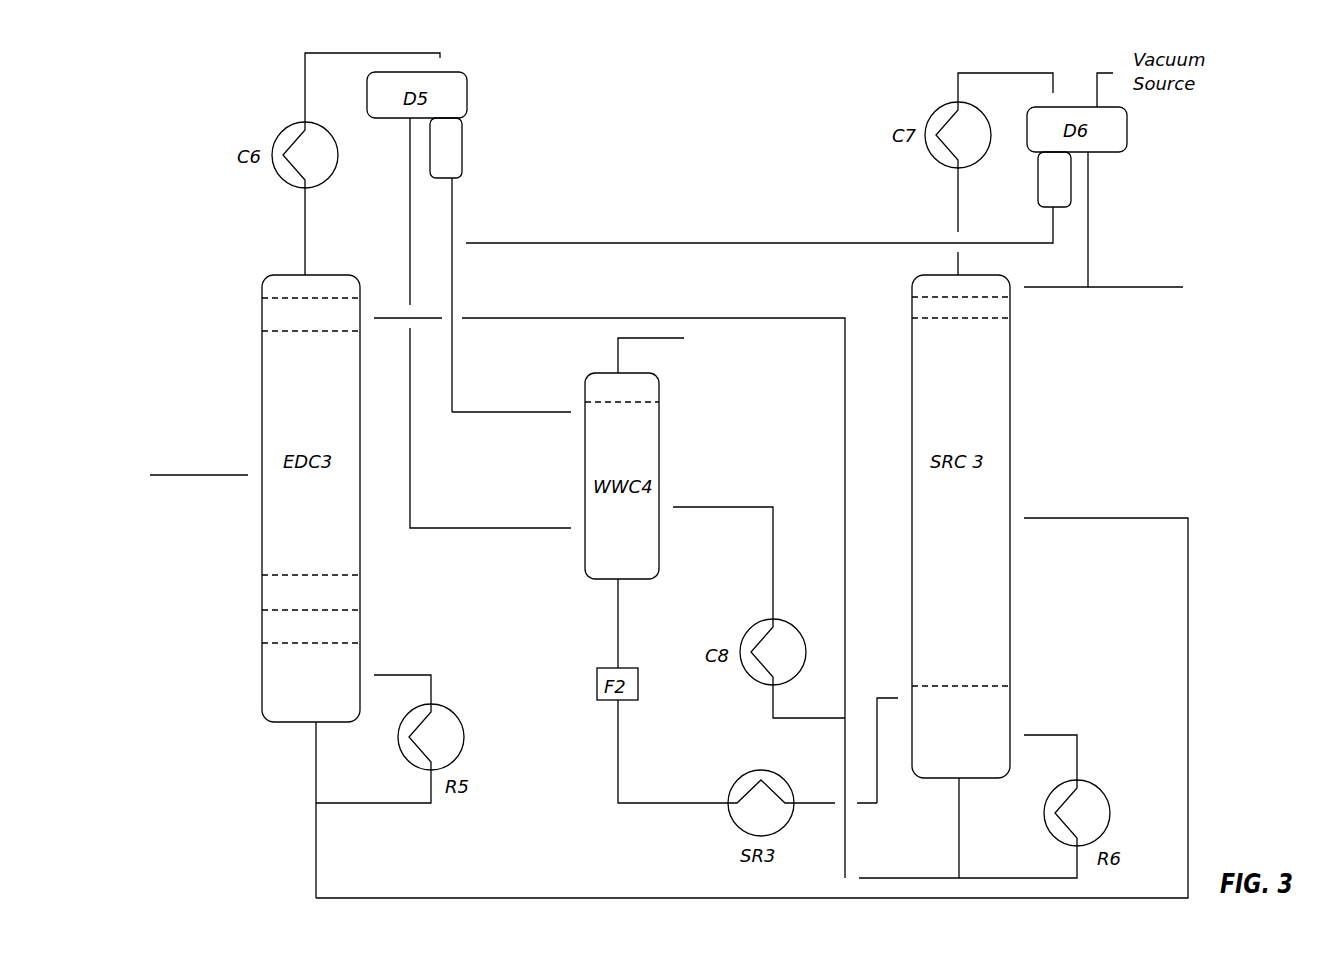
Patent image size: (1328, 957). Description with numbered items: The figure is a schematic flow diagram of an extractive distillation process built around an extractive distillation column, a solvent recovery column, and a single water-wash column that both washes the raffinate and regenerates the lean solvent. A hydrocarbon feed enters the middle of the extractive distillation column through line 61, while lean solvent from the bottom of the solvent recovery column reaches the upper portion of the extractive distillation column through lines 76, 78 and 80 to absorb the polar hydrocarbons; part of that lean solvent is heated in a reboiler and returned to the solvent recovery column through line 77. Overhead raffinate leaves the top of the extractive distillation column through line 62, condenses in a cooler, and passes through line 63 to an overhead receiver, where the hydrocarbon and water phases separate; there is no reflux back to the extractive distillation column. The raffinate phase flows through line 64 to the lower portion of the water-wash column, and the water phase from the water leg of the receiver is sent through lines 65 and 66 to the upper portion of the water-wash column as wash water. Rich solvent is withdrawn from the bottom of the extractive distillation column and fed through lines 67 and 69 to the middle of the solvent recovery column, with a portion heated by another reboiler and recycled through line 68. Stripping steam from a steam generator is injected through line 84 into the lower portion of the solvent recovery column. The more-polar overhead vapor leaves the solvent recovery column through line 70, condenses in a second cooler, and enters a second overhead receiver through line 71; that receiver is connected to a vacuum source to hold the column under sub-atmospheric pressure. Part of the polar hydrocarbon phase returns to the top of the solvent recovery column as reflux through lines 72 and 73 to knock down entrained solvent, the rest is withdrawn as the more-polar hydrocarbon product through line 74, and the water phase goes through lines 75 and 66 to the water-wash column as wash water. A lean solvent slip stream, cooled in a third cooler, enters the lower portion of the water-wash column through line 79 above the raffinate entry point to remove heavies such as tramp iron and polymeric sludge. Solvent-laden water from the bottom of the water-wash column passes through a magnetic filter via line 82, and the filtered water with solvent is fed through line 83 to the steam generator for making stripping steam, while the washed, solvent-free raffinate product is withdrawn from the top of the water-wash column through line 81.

The hydrocarbon feed line 61 is at (199, 462).
The overhead raffinate line 62 is at (288, 231).
The condensed raffinate transfer line 63 is at (372, 87).
The raffinate phase line 64 is at (474, 323).
The water phase line from D5 65 is at (466, 295).
The wash water feed line 66 is at (511, 398).
The rich solvent withdrawal line 67 is at (298, 810).
The reboiler R5 recycle line 68 is at (373, 725).
The rich solvent feed line to SRC3 69 is at (767, 708).
The SRC3 overhead vapor line 70 is at (974, 221).
The condensed overhead line to D6 71 is at (1005, 75).
The polar hydrocarbon reflux line 72 is at (1104, 219).
The reflux return line to SRC3 73 is at (1056, 299).
The more-polar hydrocarbon product line 74 is at (1135, 299).
The water phase line from D6 75 is at (759, 225).
The lean solvent bottoms line 76 is at (975, 828).
The reboiler R6 recycle line 77 is at (1050, 744).
The lean solvent transfer line 78 is at (968, 862).
The lean solvent slip stream line 79 is at (723, 544).
The lean solvent feed line to EDC3 80 is at (609, 585).
The solvent-free raffinate product line 81 is at (675, 352).
The solvent-laden water line 82 is at (634, 623).
The filtered water line to SR3 83 is at (747, 751).
The stripping steam injection line 84 is at (893, 750).